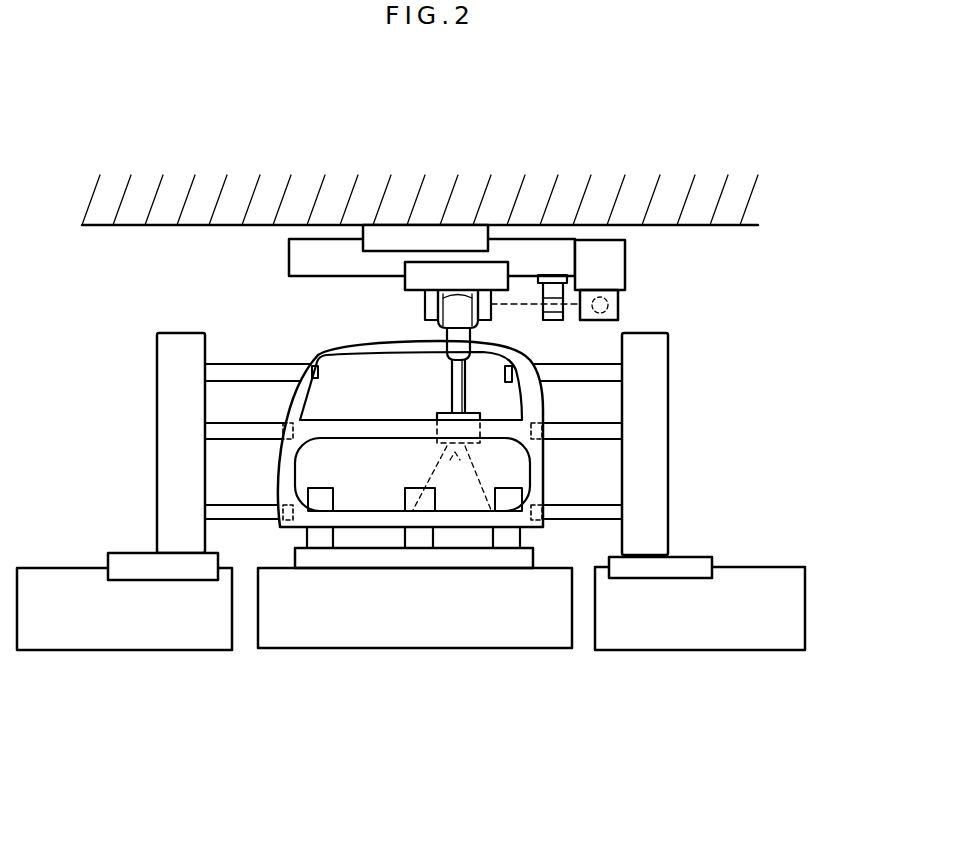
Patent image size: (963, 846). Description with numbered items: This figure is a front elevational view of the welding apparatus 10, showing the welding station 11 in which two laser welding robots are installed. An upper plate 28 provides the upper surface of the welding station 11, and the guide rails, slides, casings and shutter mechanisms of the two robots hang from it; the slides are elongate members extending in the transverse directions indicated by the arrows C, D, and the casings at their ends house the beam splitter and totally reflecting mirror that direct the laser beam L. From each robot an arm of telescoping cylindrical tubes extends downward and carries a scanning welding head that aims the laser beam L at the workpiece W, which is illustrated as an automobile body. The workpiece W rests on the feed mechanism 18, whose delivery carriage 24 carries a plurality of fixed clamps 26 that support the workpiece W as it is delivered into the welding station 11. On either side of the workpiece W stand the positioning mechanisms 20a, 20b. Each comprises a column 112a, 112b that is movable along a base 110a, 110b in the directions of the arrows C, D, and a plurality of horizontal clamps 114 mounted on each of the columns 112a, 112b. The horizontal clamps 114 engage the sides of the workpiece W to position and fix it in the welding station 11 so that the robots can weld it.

The welding apparatus 10 is at (581, 153).
The welding station 11 is at (203, 287).
The feed mechanism 18 is at (513, 630).
The positioning mechanism 20a is at (150, 432).
The positioning mechanism 20b is at (683, 428).
The delivery carriage 24 is at (536, 560).
The clamps 26 is at (318, 540).
The upper plate 28 is at (725, 218).
The base 110a is at (130, 635).
The base 110b is at (665, 635).
The column 112a is at (158, 494).
The column 112b is at (662, 484).
The horizontal clamps 114 is at (240, 372).
The workpiece W is at (280, 485).
The laser beam L is at (470, 452).
The direction arrow C is at (415, 740).
The direction arrow D is at (502, 740).